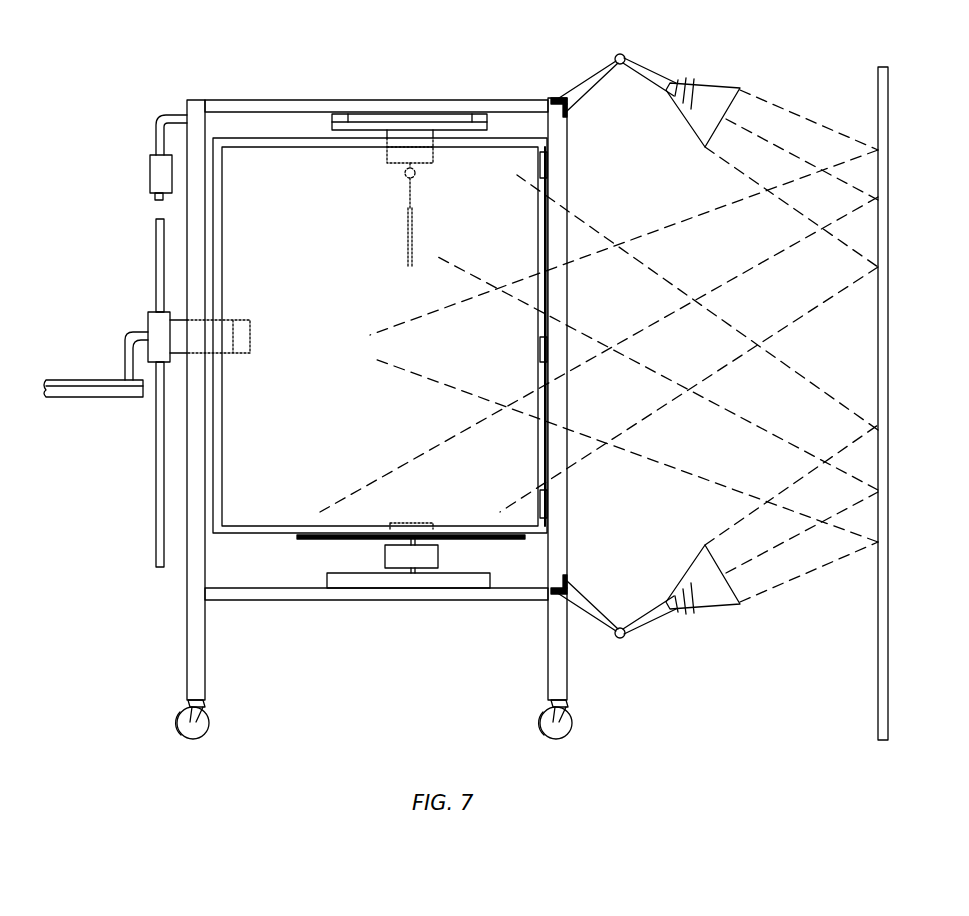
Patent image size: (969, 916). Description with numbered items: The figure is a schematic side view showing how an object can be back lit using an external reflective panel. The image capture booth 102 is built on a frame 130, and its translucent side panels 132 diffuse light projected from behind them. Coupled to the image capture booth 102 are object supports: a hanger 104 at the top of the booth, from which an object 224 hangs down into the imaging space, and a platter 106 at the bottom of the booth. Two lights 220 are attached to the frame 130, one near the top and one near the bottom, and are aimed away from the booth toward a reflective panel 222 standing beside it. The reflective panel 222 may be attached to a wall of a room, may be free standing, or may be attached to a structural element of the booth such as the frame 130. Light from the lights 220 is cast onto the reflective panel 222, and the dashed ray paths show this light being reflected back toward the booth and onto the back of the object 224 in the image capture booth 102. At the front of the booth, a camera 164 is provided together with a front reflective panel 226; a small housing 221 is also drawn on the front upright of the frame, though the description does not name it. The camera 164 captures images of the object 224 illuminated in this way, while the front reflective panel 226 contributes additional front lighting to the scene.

The image capture booth 102 is at (321, 69).
The hanger 104 is at (394, 168).
The platter 106 is at (388, 560).
The frame 130 is at (567, 160).
The side panels 132 is at (380, 338).
The camera 164 is at (148, 324).
The lights 220 is at (726, 100).
The junction box 221 is at (150, 180).
The reflective panel 222 is at (878, 678).
The object 224 is at (408, 255).
The front reflective panel 226 is at (158, 501).